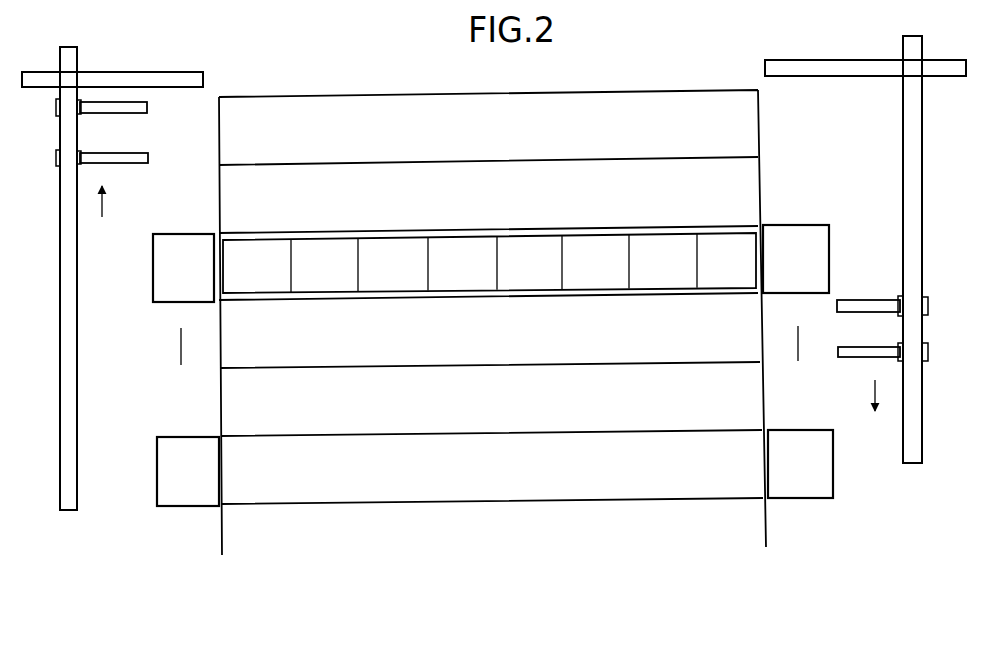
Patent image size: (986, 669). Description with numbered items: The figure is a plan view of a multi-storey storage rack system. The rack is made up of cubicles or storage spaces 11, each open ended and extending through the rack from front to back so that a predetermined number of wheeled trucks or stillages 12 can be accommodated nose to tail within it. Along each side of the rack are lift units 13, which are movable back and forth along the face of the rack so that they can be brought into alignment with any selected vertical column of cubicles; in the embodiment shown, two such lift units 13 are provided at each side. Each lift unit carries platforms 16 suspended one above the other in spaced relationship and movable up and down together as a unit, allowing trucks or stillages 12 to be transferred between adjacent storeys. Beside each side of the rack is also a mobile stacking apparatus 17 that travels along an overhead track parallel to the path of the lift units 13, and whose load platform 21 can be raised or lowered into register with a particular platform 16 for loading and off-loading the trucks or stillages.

The cubicles or storage spaces 11 is at (359, 170).
The wheeled trucks or stillages 12 is at (440, 242).
The lift units 13 is at (150, 282).
The platforms 16 is at (173, 240).
The mobile stacking apparatus 17 is at (52, 120).
The load platform 21 is at (118, 152).